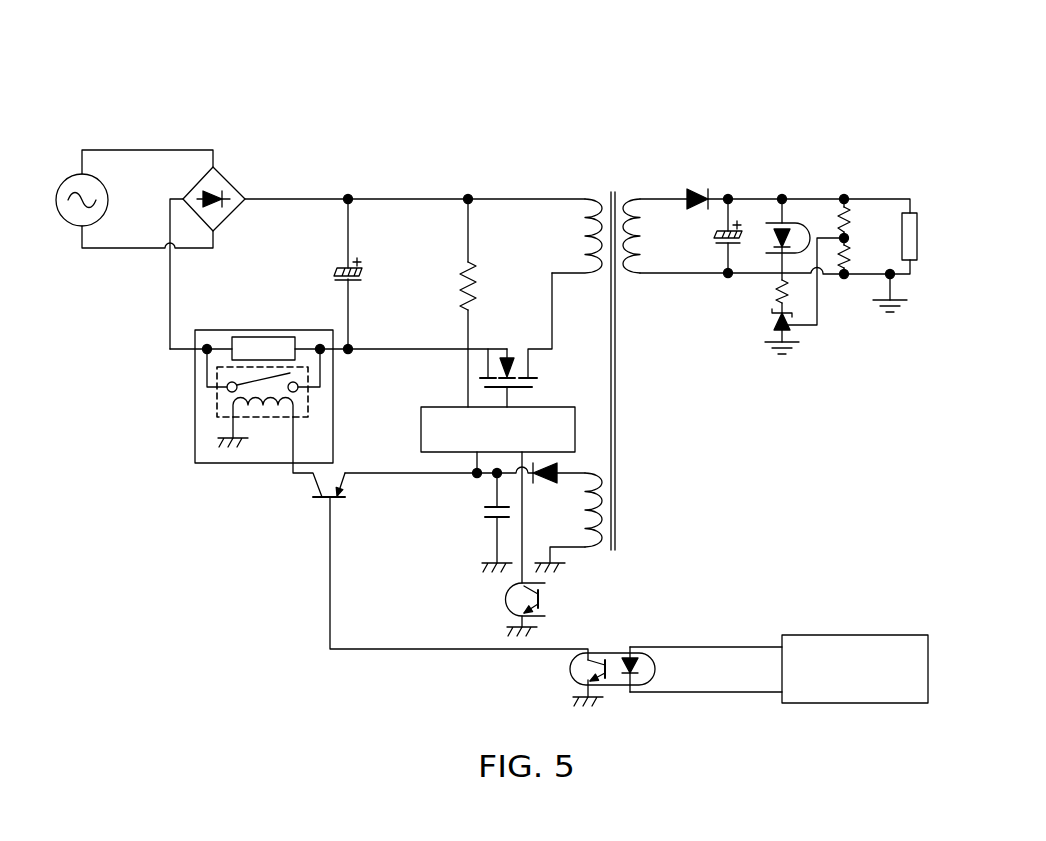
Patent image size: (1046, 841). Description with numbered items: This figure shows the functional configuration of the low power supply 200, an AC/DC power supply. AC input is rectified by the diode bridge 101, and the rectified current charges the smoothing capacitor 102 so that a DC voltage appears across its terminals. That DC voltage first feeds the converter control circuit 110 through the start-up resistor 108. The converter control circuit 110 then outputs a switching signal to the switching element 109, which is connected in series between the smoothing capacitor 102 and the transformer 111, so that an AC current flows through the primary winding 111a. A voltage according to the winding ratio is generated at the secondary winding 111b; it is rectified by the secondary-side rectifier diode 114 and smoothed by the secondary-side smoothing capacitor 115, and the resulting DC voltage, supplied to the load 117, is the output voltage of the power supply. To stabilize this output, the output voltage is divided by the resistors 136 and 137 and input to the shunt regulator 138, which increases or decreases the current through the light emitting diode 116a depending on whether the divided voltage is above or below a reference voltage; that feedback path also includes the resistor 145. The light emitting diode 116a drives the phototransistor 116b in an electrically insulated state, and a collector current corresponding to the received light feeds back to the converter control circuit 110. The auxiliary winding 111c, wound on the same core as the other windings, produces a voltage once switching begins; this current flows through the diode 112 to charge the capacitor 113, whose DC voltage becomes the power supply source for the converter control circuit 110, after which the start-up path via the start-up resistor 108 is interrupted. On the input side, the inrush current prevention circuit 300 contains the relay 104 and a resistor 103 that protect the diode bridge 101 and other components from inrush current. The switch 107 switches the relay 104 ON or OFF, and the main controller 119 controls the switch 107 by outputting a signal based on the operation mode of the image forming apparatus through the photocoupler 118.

The low power supply 200 is at (692, 108).
The diode bridge 101 is at (226, 175).
The smoothing capacitor 102 is at (336, 272).
The current limiting resistor 103 is at (276, 337).
The relay 104 is at (217, 402).
The inrush current prevention circuit 300 is at (252, 463).
The switch 107 is at (317, 491).
The start-up resistor 108 is at (460, 288).
The switching element 109 is at (497, 348).
The converter control circuit 110 is at (560, 407).
The transformer 111 is at (611, 192).
The primary winding 111a is at (585, 199).
The secondary winding 111b is at (633, 199).
The auxiliary winding 111c is at (590, 549).
The diode 112 is at (548, 485).
The capacitor 113 is at (483, 507).
The secondary-side rectifier diode 114 is at (698, 193).
The secondary-side smoothing capacitor 115 is at (716, 236).
The light emitting diode 116a is at (795, 222).
The phototransistor 116b is at (506, 600).
The load 117 is at (919, 229).
The photocoupler 118 is at (570, 669).
The main controller 119 is at (858, 635).
The resistor 136 is at (848, 223).
The resistor 137 is at (848, 257).
The shunt regulator 138 is at (774, 323).
The resistor 145 is at (774, 283).